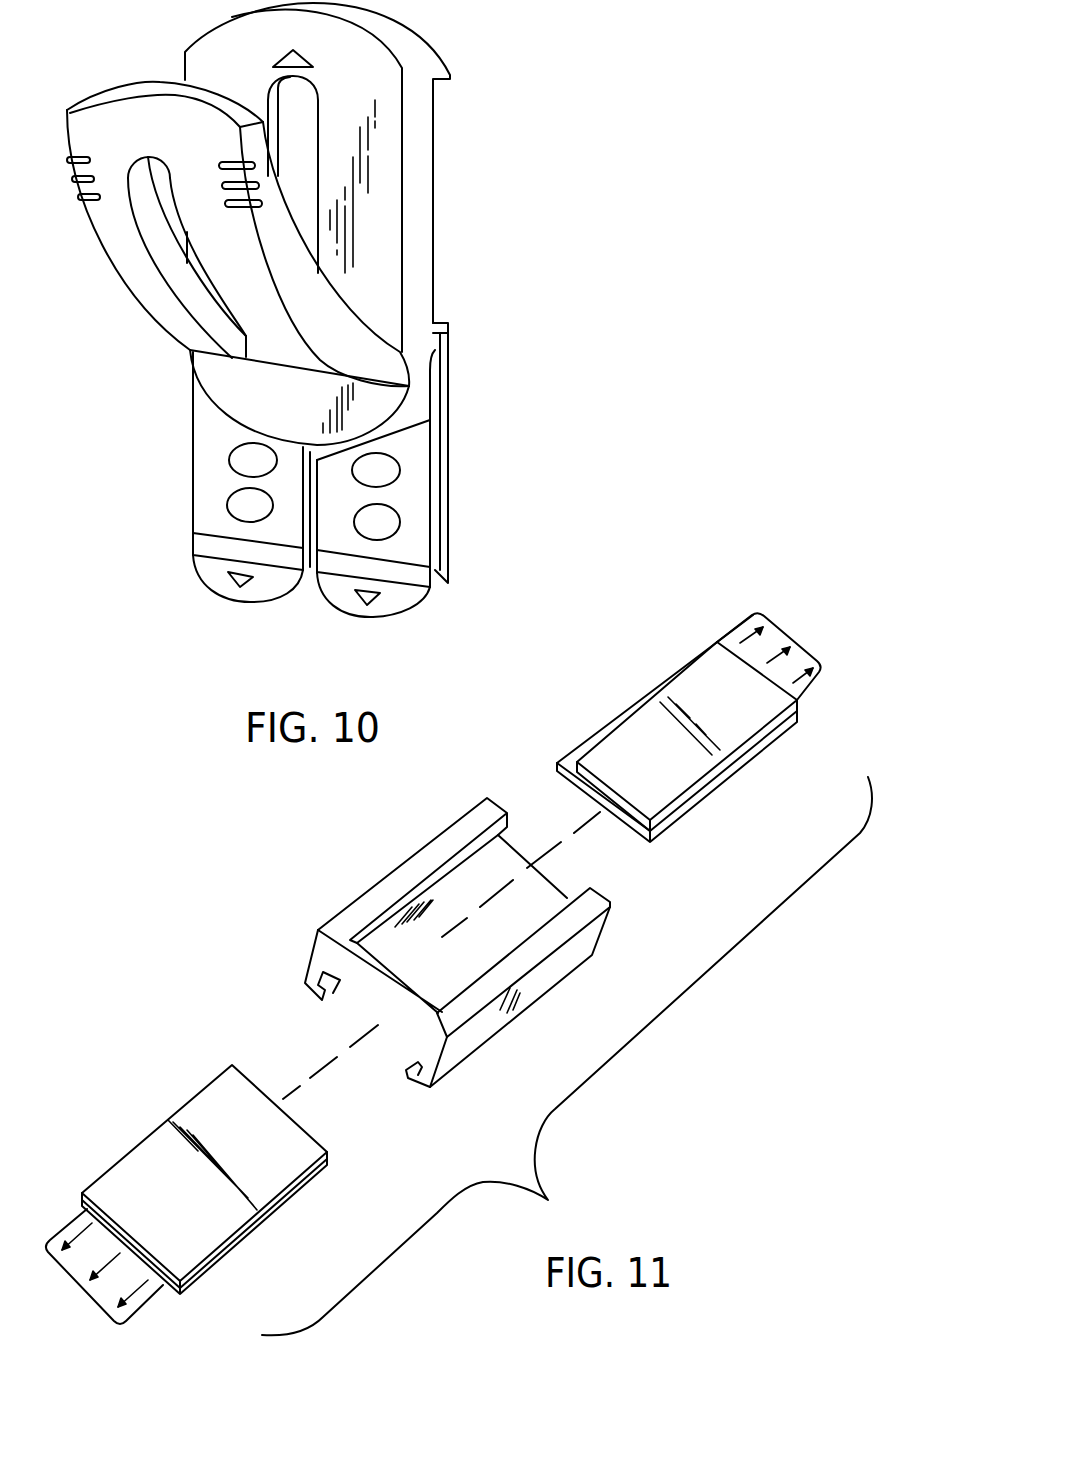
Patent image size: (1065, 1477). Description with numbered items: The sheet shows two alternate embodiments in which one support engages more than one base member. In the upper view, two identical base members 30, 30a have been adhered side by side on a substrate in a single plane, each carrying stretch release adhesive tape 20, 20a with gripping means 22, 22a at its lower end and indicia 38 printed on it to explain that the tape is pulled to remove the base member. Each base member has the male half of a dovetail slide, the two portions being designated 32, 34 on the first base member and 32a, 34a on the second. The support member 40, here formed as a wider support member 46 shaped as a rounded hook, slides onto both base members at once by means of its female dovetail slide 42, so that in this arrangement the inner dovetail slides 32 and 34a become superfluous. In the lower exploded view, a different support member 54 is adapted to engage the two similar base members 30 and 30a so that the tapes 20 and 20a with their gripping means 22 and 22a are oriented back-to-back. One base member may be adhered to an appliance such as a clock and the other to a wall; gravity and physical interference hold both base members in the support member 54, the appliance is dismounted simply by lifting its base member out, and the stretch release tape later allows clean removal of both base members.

In FIG. 11, the stretch release adhesive tape 20 is at (175, 1282).
In FIG. 11, the stretch release adhesive tape 20a is at (787, 727).
In FIG. 10, the gripping means 22 is at (213, 578).
In FIG. 11, the gripping means 22 is at (75, 1267).
In FIG. 10, the gripping means 22a is at (390, 607).
In FIG. 11, the gripping means 22a is at (773, 636).
In FIG. 10, the base member 30 is at (218, 494).
In FIG. 11, the base member 30 is at (255, 1185).
In FIG. 10, the second base member 30a is at (410, 497).
In FIG. 11, the second base member 30a is at (681, 772).
In FIG. 10, the dovetail slide 32 is at (310, 510).
In FIG. 10, the dovetail slide 32a is at (447, 452).
In FIG. 10, the dovetail slide 34 is at (192, 453).
In FIG. 10, the dovetail slide 34a is at (373, 440).
In FIG. 10, the indicia 38 is at (405, 528).
In FIG. 10, the support member 40 is at (383, 140).
In FIG. 10, the female dovetail slide 42 is at (435, 244).
In FIG. 10, the wider support member 46 is at (78, 132).
In FIG. 11, the support member 54 is at (495, 1020).